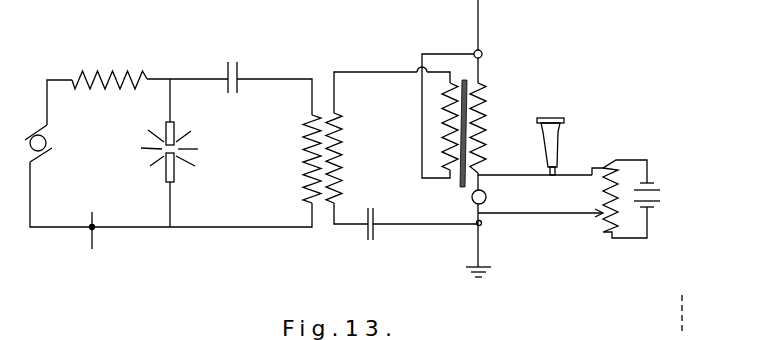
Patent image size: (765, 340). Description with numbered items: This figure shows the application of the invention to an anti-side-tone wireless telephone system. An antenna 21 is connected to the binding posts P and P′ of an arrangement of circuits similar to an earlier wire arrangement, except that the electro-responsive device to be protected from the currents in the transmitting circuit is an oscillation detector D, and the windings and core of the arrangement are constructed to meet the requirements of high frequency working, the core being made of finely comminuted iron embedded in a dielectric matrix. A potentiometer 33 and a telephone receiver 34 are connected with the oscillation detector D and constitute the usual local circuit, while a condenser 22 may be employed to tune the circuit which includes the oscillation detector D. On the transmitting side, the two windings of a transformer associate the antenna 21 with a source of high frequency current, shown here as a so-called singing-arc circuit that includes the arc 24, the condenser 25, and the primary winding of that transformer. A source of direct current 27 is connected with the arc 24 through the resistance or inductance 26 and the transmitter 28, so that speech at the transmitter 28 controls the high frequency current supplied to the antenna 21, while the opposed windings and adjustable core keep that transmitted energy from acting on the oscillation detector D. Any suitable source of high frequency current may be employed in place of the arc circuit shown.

The antenna 21 is at (464, 25).
The binding post P is at (482, 52).
The telephone receiver 34 is at (557, 120).
The potentiometer 33 is at (632, 222).
The oscillation detector D is at (487, 197).
The binding post P′ is at (482, 225).
The condenser 22 is at (382, 238).
The condenser 25 is at (244, 64).
The resistance or inductance 26 is at (113, 67).
The source of direct current 27 is at (55, 143).
The arc 24 is at (193, 158).
The transmitter 28 is at (95, 253).